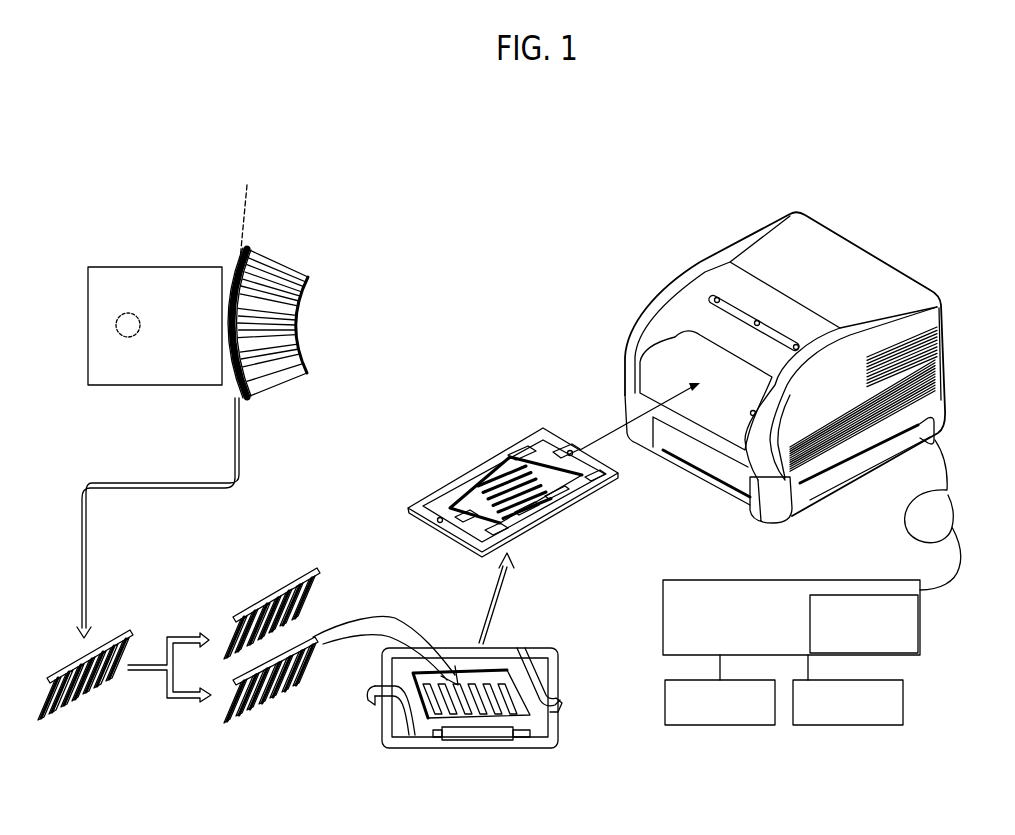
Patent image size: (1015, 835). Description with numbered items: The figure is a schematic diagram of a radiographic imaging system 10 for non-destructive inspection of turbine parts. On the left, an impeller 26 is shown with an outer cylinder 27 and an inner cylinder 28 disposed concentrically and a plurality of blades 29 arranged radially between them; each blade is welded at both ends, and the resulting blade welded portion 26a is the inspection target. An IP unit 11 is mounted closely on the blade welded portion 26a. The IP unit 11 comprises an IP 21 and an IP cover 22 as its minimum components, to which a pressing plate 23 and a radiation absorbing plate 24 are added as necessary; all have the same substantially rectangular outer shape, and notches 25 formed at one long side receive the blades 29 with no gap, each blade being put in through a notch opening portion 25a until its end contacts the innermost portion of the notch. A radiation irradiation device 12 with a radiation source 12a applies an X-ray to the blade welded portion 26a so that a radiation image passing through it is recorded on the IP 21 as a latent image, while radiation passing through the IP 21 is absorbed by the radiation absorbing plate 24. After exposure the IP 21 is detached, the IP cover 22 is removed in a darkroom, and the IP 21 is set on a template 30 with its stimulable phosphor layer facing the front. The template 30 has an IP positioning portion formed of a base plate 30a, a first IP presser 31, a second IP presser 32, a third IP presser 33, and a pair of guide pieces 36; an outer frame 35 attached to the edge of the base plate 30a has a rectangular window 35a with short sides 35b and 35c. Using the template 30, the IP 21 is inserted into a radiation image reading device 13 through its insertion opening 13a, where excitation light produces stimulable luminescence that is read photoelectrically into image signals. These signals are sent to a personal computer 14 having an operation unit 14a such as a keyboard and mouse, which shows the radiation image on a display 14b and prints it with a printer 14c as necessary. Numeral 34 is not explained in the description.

The radiographic imaging system 10 is at (593, 201).
The IP unit 11 is at (235, 272).
The radiation irradiation device 12 is at (165, 267).
The radiation source 12a is at (113, 325).
The radiation image reading device 13 is at (777, 377).
The insertion opening 13a is at (690, 335).
The personal computer 14 is at (821, 650).
The operation unit 14a is at (920, 635).
The display 14b is at (715, 727).
The printer 14c is at (884, 727).
The IP 21 is at (43, 745).
The IP cover 22 is at (238, 258).
The pressing plate 23 is at (245, 257).
The radiation absorbing plate 24 is at (253, 277).
The notches 25 is at (95, 688).
The notch opening portion 25a is at (60, 712).
The impeller 26 is at (276, 289).
The blade welded portion 26a is at (233, 367).
The outer cylinder 27 is at (245, 410).
The inner cylinder 28 is at (287, 307).
The blades 29 is at (278, 287).
The template 30 is at (513, 573).
The base plate 30a is at (577, 503).
The first IP presser 31 is at (537, 497).
The second IP presser 32 is at (447, 503).
The third IP presser 33 is at (508, 463).
The frame 34 is at (458, 488).
The outer frame 35 is at (608, 478).
The rectangular window 35a is at (490, 472).
The short side 35b is at (570, 452).
The short side 35c is at (440, 522).
The guide pieces 36 is at (415, 680).